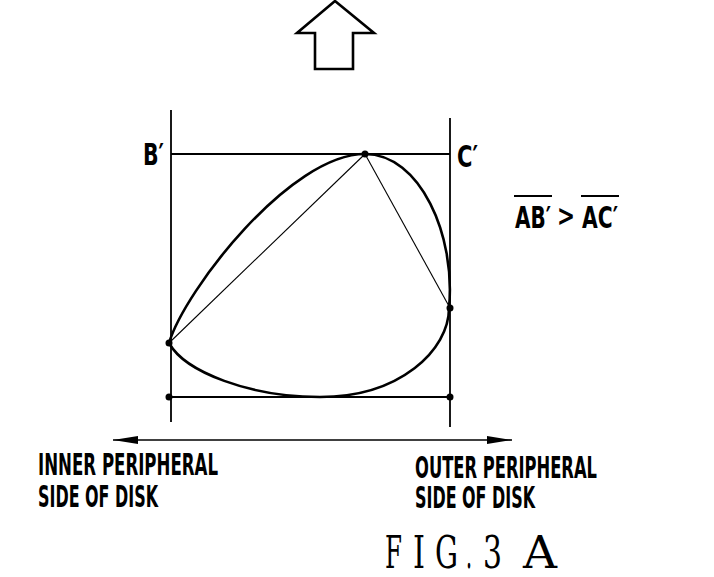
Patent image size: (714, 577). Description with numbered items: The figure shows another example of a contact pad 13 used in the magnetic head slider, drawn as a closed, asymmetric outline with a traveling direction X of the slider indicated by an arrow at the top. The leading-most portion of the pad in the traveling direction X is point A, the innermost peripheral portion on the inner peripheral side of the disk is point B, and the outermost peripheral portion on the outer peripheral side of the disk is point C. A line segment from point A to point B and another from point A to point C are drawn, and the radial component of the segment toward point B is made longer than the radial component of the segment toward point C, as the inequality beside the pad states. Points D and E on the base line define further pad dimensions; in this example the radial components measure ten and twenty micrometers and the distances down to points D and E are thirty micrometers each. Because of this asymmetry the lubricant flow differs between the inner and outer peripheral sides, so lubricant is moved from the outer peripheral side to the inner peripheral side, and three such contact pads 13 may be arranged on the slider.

The contact pad 13 is at (413, 338).
The traveling direction X is at (353, 50).
The leading-most portion A is at (366, 136).
The innermost peripheral portion B is at (160, 344).
The outermost peripheral portion C is at (459, 309).
The point D is at (160, 397).
The point E is at (459, 401).